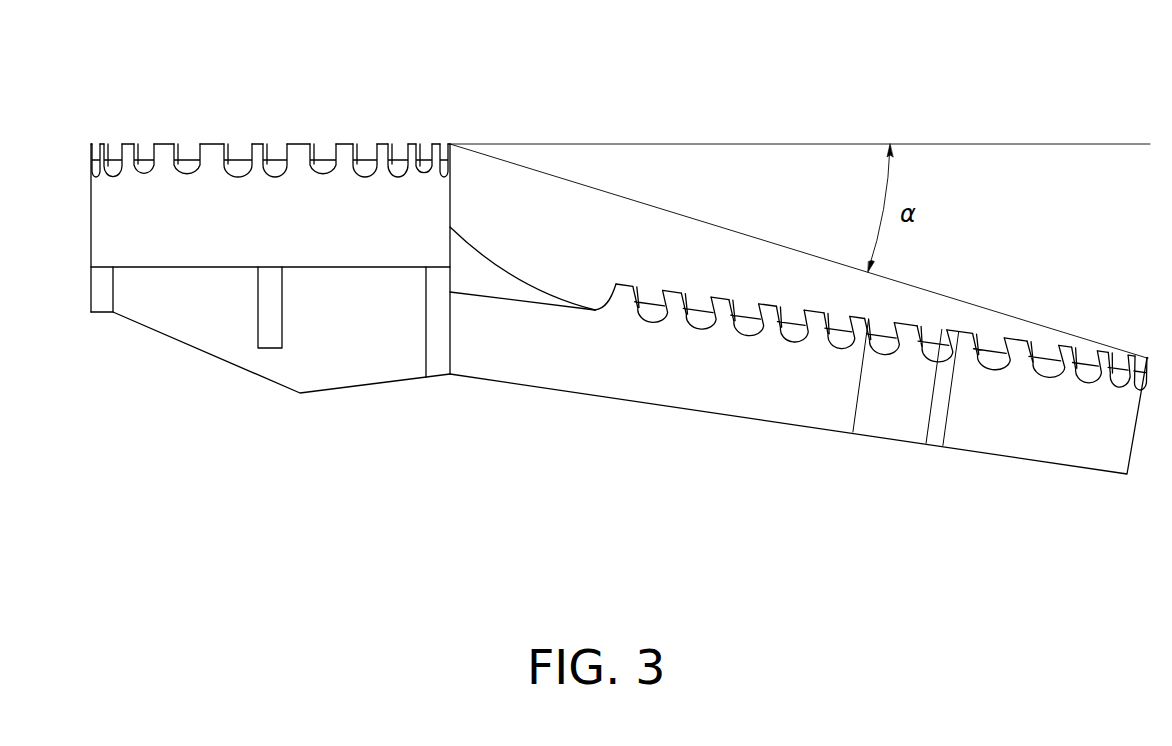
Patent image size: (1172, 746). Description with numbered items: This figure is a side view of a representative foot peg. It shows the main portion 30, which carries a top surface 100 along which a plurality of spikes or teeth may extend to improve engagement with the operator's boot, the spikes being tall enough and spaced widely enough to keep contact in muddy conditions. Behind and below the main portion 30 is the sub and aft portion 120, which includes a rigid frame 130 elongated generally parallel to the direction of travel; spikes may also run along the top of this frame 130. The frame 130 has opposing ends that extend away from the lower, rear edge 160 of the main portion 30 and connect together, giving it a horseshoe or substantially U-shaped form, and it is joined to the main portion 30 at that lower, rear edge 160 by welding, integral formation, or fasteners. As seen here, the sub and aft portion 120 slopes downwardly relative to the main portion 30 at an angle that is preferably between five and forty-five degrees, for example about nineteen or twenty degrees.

The main portion 30 is at (273, 112).
The top surface 100 is at (168, 144).
The sub and aft portion 120 is at (783, 447).
The rigid frame 130 is at (595, 397).
The lower, rear edge 160 is at (450, 328).